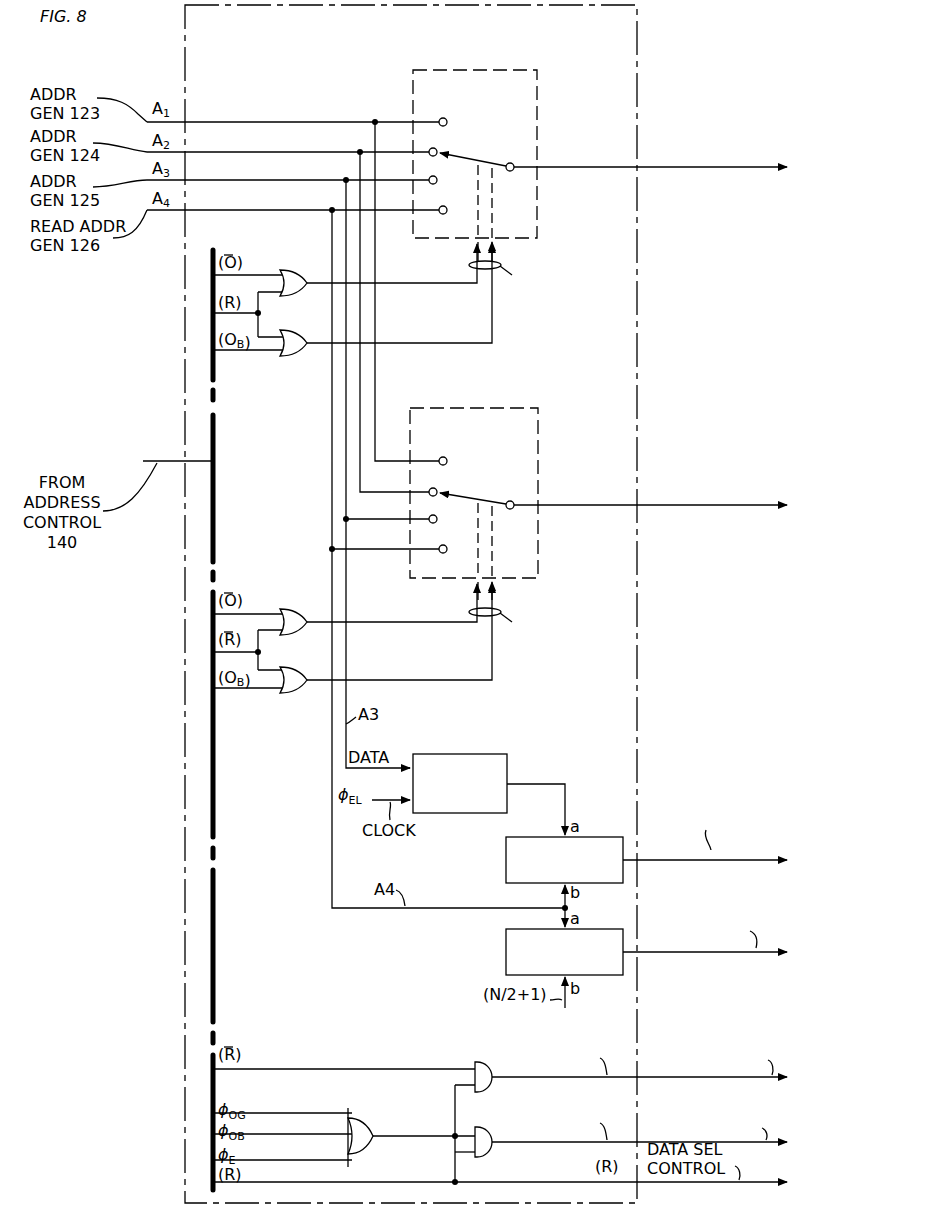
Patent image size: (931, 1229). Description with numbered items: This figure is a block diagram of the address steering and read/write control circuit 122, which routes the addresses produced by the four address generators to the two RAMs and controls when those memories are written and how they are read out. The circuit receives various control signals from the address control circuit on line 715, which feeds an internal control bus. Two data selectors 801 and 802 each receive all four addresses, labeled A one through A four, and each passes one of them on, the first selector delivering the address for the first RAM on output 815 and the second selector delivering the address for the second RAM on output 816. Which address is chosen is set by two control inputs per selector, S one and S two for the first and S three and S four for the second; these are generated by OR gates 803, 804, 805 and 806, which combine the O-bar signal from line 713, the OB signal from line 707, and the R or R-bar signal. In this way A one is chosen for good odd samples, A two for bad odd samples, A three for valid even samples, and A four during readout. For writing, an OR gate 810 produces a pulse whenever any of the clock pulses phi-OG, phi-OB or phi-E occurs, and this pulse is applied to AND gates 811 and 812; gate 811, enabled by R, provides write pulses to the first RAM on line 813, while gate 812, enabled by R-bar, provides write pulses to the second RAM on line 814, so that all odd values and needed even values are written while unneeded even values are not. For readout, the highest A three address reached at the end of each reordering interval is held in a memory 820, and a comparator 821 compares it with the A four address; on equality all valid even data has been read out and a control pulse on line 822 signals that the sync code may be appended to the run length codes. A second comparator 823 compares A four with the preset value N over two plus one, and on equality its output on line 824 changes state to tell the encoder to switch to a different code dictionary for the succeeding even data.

The address steering and read/write control circuit 122 is at (637, 12).
The data selector 801 is at (480, 72).
The data selector 802 is at (480, 410).
The OR gate 803 is at (296, 270).
The OR gate 804 is at (296, 330).
The OR gate 805 is at (296, 609).
The OR gate 806 is at (296, 667).
The line 713 is at (262, 275).
The line 707 is at (245, 352).
The line 715 is at (172, 461).
The address output for RAM 120 815 is at (720, 170).
The address output for RAM 121 816 is at (720, 508).
The memory 820 is at (470, 754).
The comparator 821 is at (506, 853).
The line 822 is at (678, 862).
The second comparator 823 is at (506, 945).
The line 824 is at (680, 954).
The OR gate 810 is at (360, 1120).
The AND gate 811 is at (486, 1088).
The AND gate 812 is at (486, 1153).
The line 813 is at (547, 1075).
The line 814 is at (547, 1140).